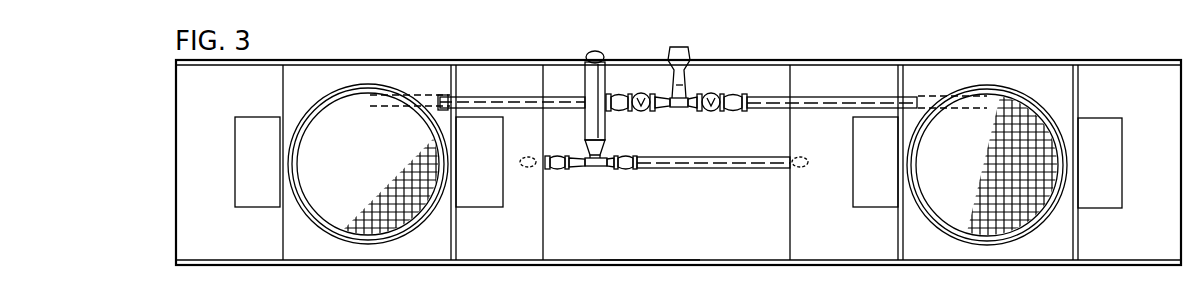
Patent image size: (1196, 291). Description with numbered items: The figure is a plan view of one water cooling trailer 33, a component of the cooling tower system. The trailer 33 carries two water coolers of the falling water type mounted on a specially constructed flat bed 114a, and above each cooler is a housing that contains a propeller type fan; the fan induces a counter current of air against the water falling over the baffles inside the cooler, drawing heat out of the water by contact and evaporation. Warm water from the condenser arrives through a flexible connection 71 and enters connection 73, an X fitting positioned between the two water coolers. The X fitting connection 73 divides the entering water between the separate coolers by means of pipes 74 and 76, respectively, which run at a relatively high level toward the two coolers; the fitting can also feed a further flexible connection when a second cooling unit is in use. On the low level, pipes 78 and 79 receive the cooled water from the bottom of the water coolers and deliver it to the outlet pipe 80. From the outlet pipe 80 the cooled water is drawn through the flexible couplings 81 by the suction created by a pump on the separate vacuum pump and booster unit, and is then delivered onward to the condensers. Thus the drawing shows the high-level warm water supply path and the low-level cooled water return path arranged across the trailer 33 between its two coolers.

The water cooling trailer 33 is at (180, 177).
The flexible connection 71 is at (674, 47).
The connection 73 is at (694, 83).
The pipe 74 is at (795, 97).
The pipe 76 is at (508, 97).
The pipe 78 is at (732, 170).
The pipe 79 is at (540, 168).
The outlet pipe 80 is at (608, 90).
The flexible coupling 81 is at (590, 52).
The flat bed 114a is at (650, 247).